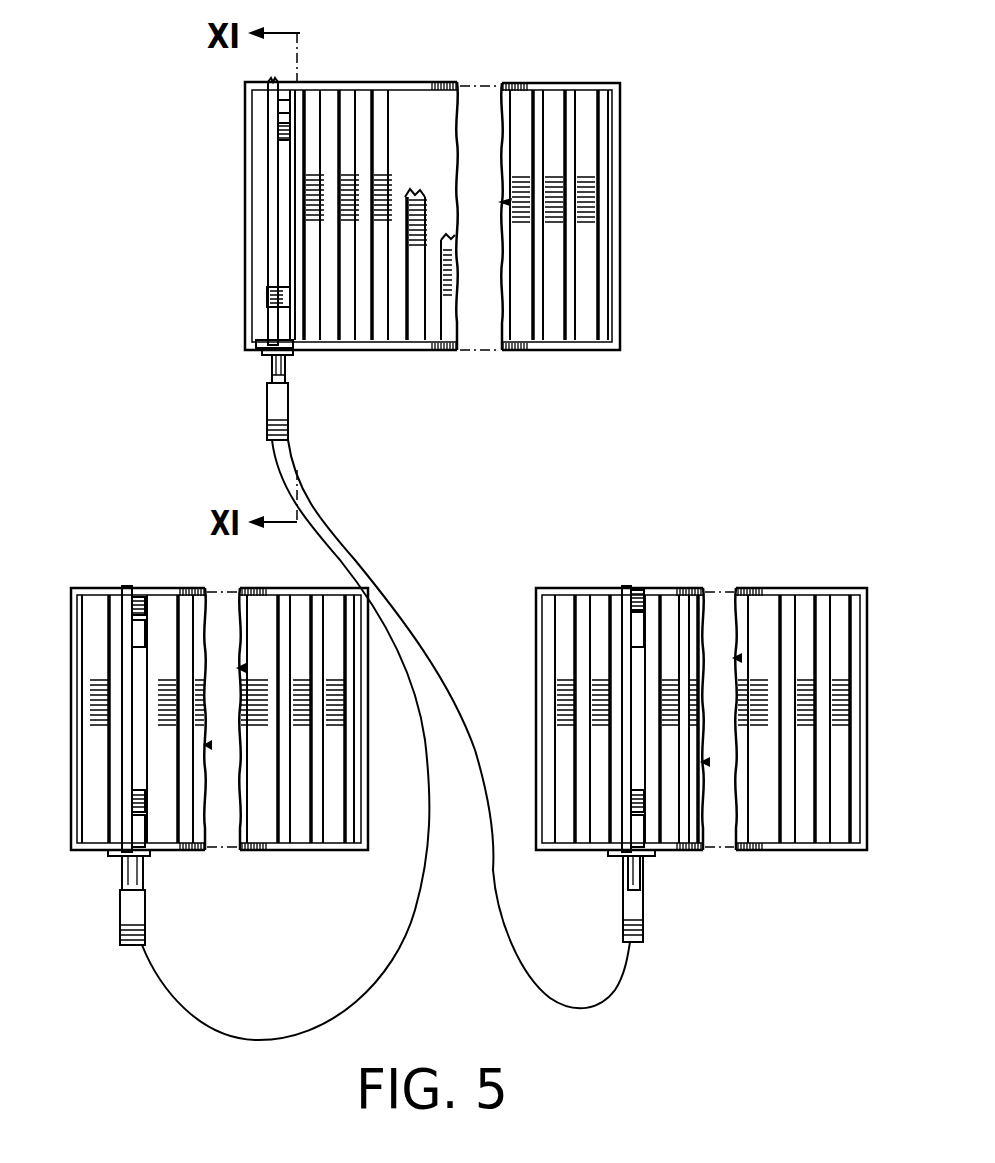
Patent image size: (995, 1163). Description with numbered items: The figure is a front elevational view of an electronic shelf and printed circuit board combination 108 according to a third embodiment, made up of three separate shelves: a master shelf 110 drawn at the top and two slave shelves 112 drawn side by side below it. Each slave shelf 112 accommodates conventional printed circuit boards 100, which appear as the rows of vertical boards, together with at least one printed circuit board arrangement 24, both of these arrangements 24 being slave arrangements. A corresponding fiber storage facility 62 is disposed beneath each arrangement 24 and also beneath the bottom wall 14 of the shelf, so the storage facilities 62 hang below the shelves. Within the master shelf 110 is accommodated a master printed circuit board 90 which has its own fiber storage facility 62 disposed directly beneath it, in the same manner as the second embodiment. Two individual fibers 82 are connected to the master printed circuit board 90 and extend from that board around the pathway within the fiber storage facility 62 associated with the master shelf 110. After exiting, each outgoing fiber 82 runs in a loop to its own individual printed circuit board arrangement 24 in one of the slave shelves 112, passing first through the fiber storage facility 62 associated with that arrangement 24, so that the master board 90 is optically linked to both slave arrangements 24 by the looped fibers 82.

The bottom wall 14 is at (392, 346).
The printed circuit board arrangement 24 is at (120, 718).
The fiber storage facility 62 is at (272, 400).
The fiber 82 is at (272, 365).
The master printed circuit board 90 is at (265, 197).
The printed circuit boards 100 is at (316, 84).
The electronic shelf and printed circuit board combination 108 is at (700, 204).
The master shelf 110 is at (568, 68).
The slave shelves 112 is at (178, 568).